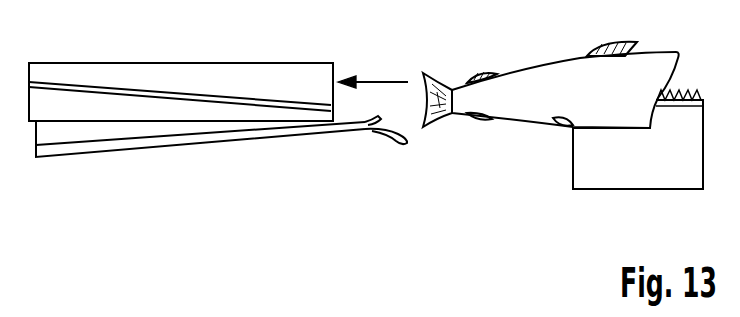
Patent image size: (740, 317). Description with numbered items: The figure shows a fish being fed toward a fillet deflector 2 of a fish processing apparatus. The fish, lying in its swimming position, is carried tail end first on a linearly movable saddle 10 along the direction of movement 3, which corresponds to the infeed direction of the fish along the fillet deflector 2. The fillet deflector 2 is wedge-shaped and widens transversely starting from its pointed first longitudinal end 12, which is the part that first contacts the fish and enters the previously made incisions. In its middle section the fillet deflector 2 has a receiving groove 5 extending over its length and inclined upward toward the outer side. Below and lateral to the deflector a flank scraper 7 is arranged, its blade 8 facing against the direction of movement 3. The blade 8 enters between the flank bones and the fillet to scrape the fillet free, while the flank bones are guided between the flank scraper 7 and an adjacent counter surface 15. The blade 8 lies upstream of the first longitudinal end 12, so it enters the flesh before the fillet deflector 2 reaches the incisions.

The fillet deflector 2 is at (148, 75).
The receiving groove 5 is at (99, 90).
The first longitudinal end 12 is at (333, 70).
The direction of movement 3 is at (381, 82).
The flank scraper 7 is at (248, 127).
The blade 8 is at (369, 128).
The counter surface 15 is at (397, 144).
The saddle 10 is at (630, 176).